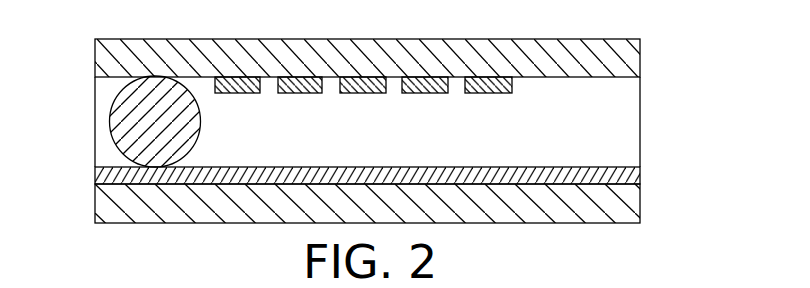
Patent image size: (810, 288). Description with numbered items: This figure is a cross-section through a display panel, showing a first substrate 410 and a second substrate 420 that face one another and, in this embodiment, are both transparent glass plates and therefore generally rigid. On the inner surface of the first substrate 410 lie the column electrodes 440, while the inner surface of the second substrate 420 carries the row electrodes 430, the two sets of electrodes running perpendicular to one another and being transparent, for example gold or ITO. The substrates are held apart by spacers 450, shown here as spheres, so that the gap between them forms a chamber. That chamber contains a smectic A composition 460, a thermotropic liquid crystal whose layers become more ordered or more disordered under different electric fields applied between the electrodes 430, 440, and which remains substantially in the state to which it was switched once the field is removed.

The first substrate 410 is at (640, 57).
The second substrate 420 is at (640, 203).
The row electrodes 430 is at (640, 172).
The column electrodes 440 is at (237, 93).
The spacers 450 is at (110, 119).
The smectic A composition 460 is at (628, 117).